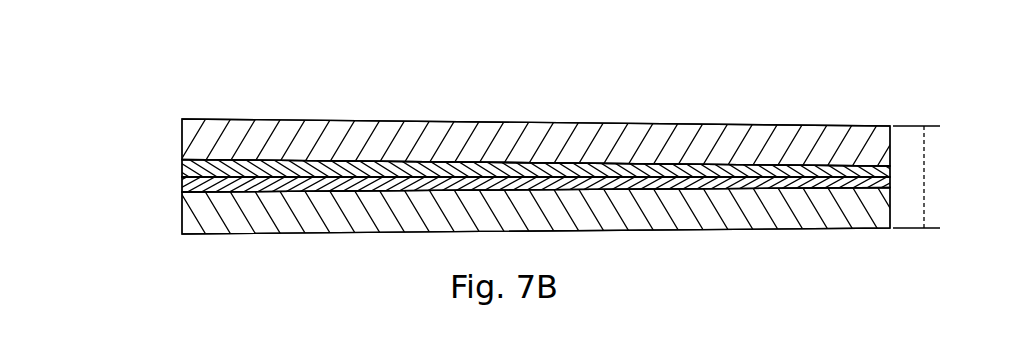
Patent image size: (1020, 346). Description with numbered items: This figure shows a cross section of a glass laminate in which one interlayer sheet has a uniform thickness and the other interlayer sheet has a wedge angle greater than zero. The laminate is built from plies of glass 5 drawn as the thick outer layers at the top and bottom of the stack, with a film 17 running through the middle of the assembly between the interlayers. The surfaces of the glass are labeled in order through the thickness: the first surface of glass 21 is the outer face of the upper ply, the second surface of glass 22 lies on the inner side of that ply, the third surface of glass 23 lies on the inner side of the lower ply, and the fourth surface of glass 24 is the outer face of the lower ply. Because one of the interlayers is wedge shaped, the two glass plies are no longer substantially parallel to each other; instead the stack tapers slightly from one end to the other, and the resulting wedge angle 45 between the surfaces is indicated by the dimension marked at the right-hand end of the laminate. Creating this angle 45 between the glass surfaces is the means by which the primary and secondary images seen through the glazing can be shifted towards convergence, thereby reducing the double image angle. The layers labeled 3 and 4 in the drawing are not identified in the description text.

The first adhesive layer 3 is at (174, 156).
The second adhesive layer 4 is at (171, 194).
The glass 5 is at (174, 132).
The film 17 is at (172, 177).
The first surface of glass 21 is at (636, 123).
The second surface of glass 22 is at (741, 159).
The third surface of glass 23 is at (741, 198).
The fourth surface of glass 24 is at (685, 237).
The wedge angle 45 is at (924, 177).